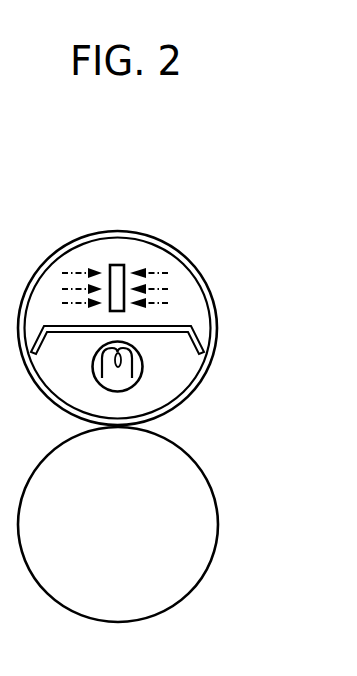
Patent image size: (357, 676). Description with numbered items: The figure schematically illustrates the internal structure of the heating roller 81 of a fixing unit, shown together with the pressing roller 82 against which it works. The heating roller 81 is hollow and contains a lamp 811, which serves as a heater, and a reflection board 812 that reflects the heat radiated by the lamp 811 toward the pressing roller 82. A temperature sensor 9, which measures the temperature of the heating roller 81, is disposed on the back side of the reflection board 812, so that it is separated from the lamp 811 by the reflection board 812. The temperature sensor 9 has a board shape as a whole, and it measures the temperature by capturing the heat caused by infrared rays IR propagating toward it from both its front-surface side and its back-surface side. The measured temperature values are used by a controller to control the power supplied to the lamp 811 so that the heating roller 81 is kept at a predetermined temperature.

The heating roller 81 is at (213, 298).
The pressing roller 82 is at (217, 501).
The temperature sensor 9 is at (122, 270).
The infrared rays IR is at (165, 272).
The lamp 811 is at (143, 362).
The reflection board 812 is at (197, 341).